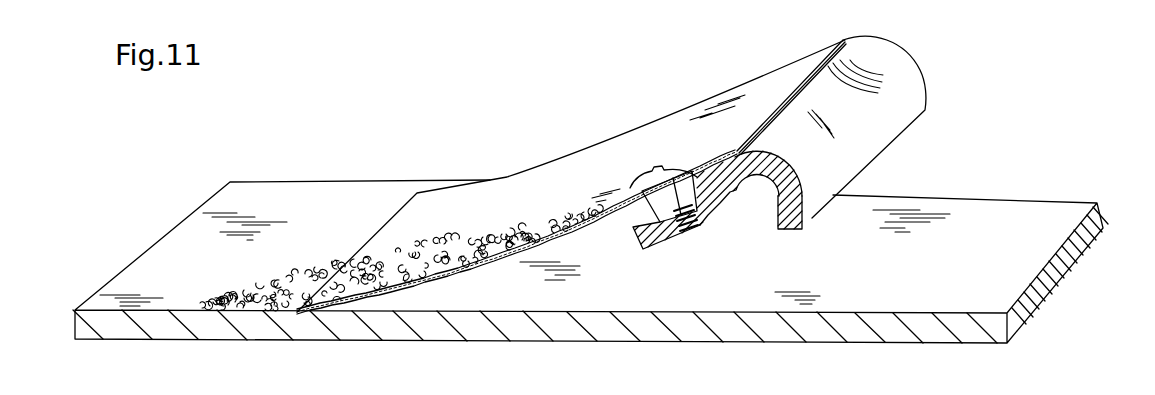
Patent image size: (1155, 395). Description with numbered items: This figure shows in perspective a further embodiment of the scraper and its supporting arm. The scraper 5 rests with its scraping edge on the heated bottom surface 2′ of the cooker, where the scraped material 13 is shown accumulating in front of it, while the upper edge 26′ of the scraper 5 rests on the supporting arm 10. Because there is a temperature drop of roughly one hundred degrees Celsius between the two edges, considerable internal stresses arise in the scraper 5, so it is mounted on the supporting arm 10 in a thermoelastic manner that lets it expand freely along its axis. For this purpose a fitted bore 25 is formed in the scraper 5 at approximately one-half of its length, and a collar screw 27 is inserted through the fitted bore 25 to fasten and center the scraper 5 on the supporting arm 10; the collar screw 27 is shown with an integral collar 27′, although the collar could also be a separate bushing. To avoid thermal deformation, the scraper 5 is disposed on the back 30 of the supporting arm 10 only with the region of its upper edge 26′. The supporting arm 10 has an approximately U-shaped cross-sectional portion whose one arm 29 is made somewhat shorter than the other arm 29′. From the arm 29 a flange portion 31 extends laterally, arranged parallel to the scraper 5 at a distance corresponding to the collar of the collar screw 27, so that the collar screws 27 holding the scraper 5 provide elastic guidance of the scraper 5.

The heated bottom surface 2′ is at (928, 333).
The scraper 5 is at (568, 229).
The supporting arm 10 is at (893, 73).
The bulk material 13 is at (293, 288).
The fitted bore 25 is at (633, 192).
The upper edge 26′ is at (740, 150).
The collar screw 27 is at (667, 165).
The integral collar 27′ is at (692, 178).
The arm 29 is at (728, 194).
The other arm 29′ is at (792, 220).
The back 30 is at (781, 152).
The flange portion 31 is at (640, 240).